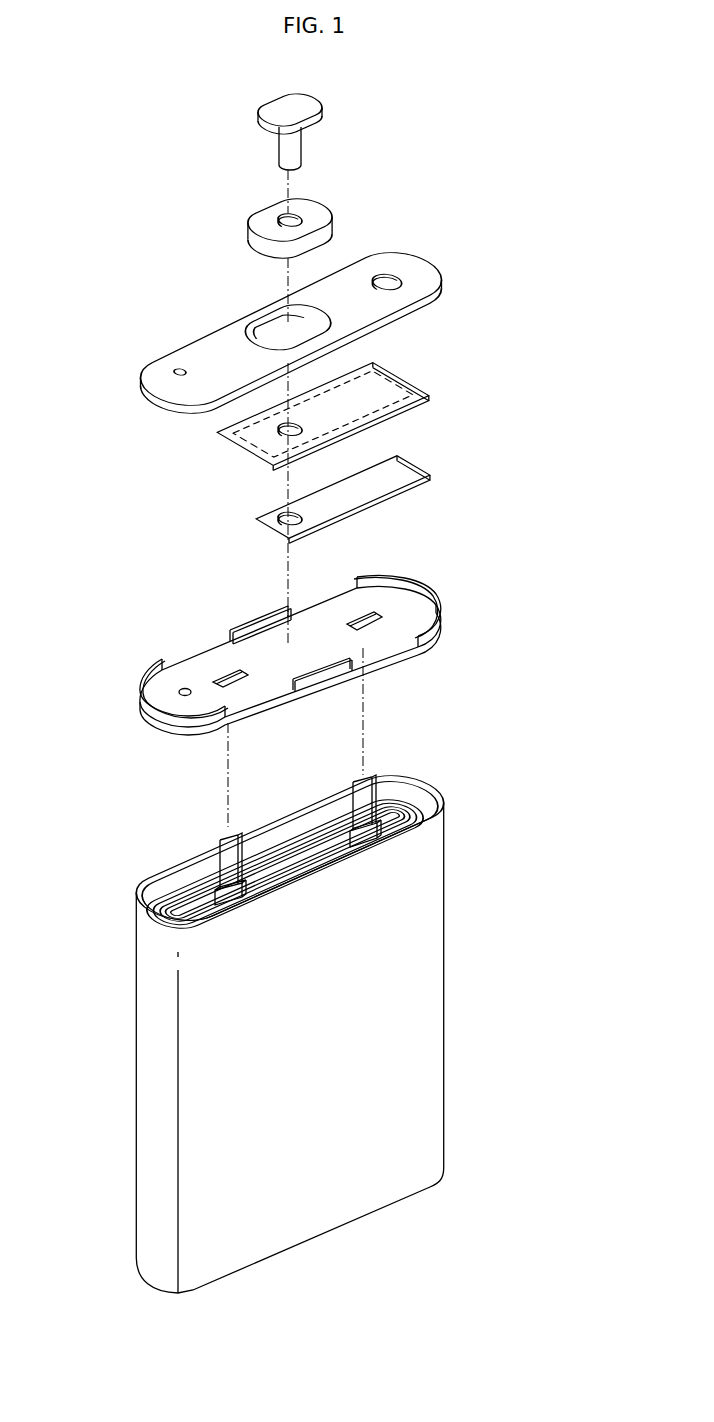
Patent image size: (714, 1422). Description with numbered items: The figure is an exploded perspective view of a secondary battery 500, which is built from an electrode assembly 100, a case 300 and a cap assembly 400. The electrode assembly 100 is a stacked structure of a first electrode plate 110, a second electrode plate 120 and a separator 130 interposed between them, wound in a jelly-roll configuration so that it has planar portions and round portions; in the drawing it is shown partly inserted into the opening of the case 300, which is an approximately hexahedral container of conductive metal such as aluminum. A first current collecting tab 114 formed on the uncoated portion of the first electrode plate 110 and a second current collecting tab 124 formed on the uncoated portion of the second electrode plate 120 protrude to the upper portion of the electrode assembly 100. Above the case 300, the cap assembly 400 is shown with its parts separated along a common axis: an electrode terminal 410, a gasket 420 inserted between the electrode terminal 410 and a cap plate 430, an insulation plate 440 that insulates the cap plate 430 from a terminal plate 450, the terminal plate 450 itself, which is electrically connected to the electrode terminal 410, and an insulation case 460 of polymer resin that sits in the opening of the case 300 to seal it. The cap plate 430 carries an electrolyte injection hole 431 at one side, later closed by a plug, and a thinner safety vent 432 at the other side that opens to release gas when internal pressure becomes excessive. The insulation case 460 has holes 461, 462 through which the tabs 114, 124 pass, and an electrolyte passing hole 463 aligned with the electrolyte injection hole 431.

The secondary battery 500 is at (78, 95).
The electrode assembly 100 is at (513, 768).
The first electrode plate 110 is at (425, 806).
The first current collecting tab 114 is at (227, 857).
The second electrode plate 120 is at (404, 803).
The second current collecting tab 124 is at (360, 803).
The separator 130 is at (389, 813).
The case 300 is at (458, 982).
The cap assembly 400 is at (527, 134).
The electrode terminal 410 is at (313, 108).
The gasket 420 is at (263, 217).
The cap plate 430 is at (423, 266).
The electrolyte injection hole 431 is at (178, 368).
The safety vent 432 is at (390, 274).
The insulation plate 440 is at (407, 382).
The terminal plate 450 is at (408, 466).
The insulation case 460 is at (430, 568).
The hole 461 is at (225, 676).
The hole 462 is at (360, 617).
The electrolyte passing hole 463 is at (185, 688).